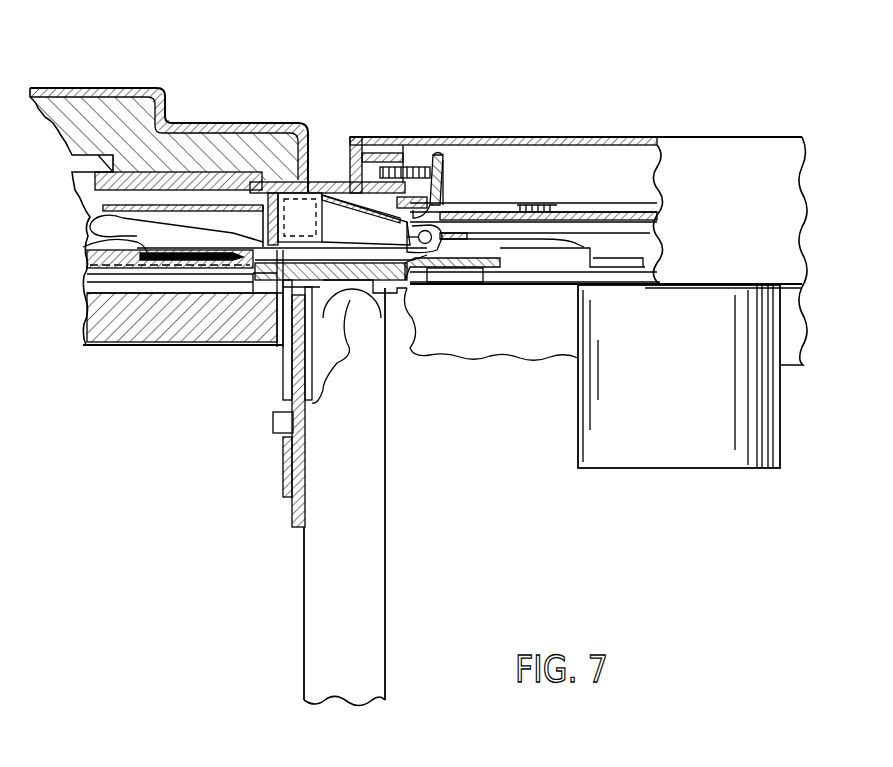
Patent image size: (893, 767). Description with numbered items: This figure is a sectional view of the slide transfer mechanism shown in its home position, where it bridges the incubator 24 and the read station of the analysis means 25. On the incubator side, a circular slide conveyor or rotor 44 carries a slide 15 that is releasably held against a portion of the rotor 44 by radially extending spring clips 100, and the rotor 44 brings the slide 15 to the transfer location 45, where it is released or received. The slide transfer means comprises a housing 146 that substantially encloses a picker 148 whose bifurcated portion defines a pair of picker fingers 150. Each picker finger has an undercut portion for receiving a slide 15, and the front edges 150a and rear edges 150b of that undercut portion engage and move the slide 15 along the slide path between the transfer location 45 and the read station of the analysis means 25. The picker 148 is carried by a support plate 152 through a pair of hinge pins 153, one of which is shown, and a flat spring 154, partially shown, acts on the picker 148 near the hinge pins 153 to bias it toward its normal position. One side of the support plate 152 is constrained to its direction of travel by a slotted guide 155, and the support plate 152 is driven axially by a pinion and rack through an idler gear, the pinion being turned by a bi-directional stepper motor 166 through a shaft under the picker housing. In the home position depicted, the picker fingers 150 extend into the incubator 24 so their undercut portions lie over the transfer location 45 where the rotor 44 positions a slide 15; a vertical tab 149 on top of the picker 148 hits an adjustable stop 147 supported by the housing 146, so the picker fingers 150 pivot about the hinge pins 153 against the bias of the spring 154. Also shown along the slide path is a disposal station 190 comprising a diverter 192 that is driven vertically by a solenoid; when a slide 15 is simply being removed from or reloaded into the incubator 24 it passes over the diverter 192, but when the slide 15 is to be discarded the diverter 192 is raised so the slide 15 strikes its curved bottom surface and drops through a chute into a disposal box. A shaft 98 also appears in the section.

The incubator 24 is at (172, 76).
The transfer location 45 is at (230, 196).
The picker fingers 150 is at (84, 212).
The front edges 150a is at (91, 232).
The spring clips 100 is at (78, 253).
The rotor 44 is at (163, 319).
The slide 15 is at (163, 247).
The rear edges 150b is at (215, 230).
The disposal station 190 is at (262, 365).
The picker 148 is at (338, 152).
The housing 146 is at (386, 137).
The flat spring 154 is at (403, 182).
The adjustable stop 147 is at (434, 154).
The vertical tab 149 is at (445, 168).
The hinge pins 153 is at (430, 237).
The support plate 152 is at (588, 210).
The slotted guide 155 is at (627, 203).
The diverter 192 is at (378, 312).
The analysis means 25 is at (500, 355).
The shaft 98 is at (378, 506).
The stepper motor 166 is at (643, 460).